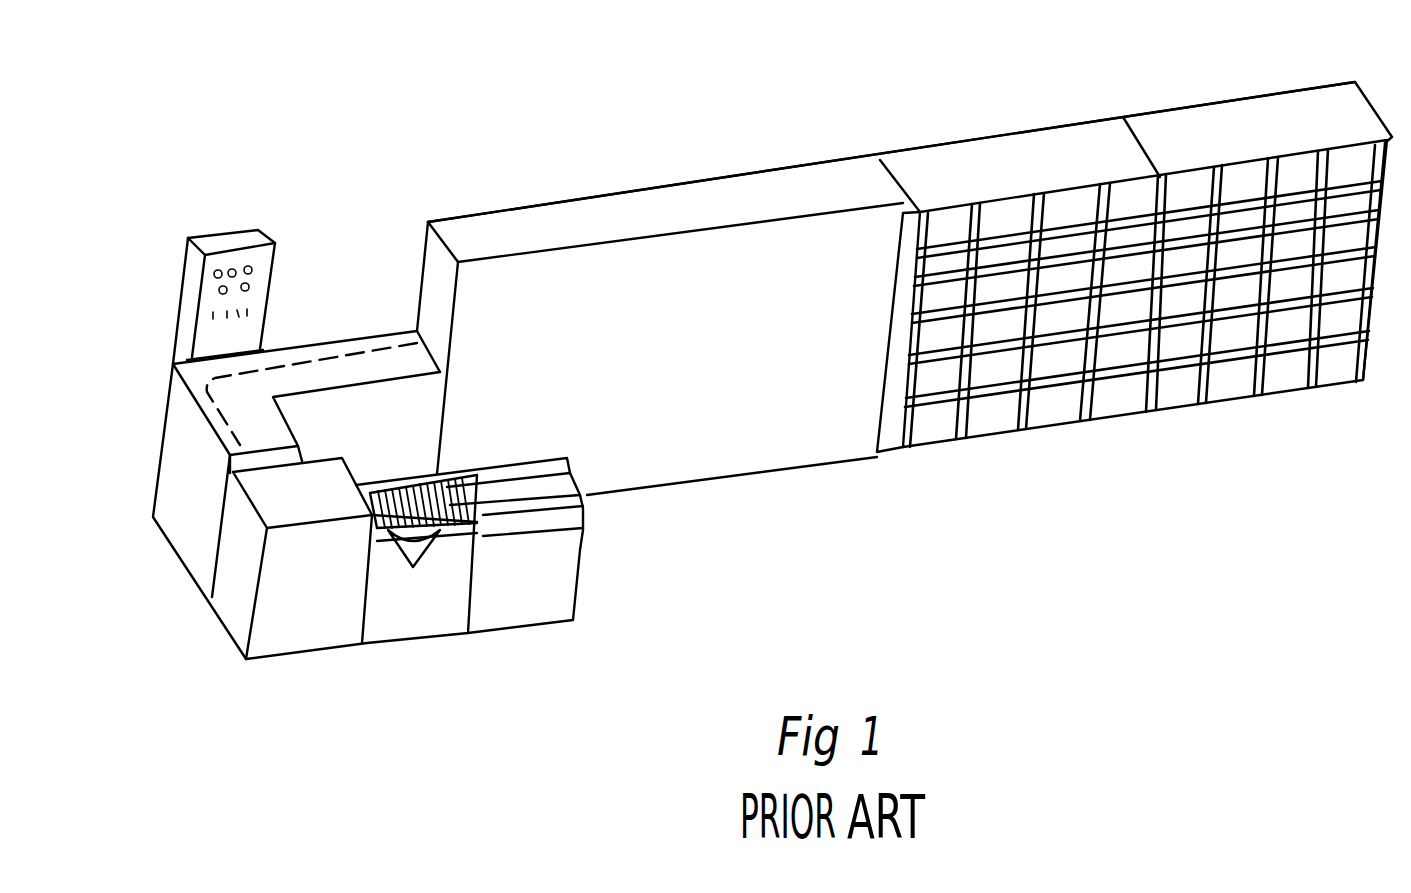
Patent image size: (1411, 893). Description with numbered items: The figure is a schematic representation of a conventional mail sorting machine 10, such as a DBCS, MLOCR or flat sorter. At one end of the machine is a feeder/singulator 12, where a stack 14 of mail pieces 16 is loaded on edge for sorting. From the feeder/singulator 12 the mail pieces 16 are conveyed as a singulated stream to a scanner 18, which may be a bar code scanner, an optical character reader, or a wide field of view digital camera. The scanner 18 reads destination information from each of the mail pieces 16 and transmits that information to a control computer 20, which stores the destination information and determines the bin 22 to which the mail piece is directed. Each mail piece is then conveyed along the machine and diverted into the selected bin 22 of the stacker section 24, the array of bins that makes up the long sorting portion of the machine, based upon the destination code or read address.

The mail sorting machine 10 is at (638, 104).
The feeder/singulator 12 is at (587, 557).
The stack 14 is at (452, 490).
The mail pieces 16 is at (413, 568).
The scanner 18 is at (213, 424).
The control computer 20 is at (229, 236).
The bin 22 is at (1297, 388).
The stacker section 24 is at (1003, 114).